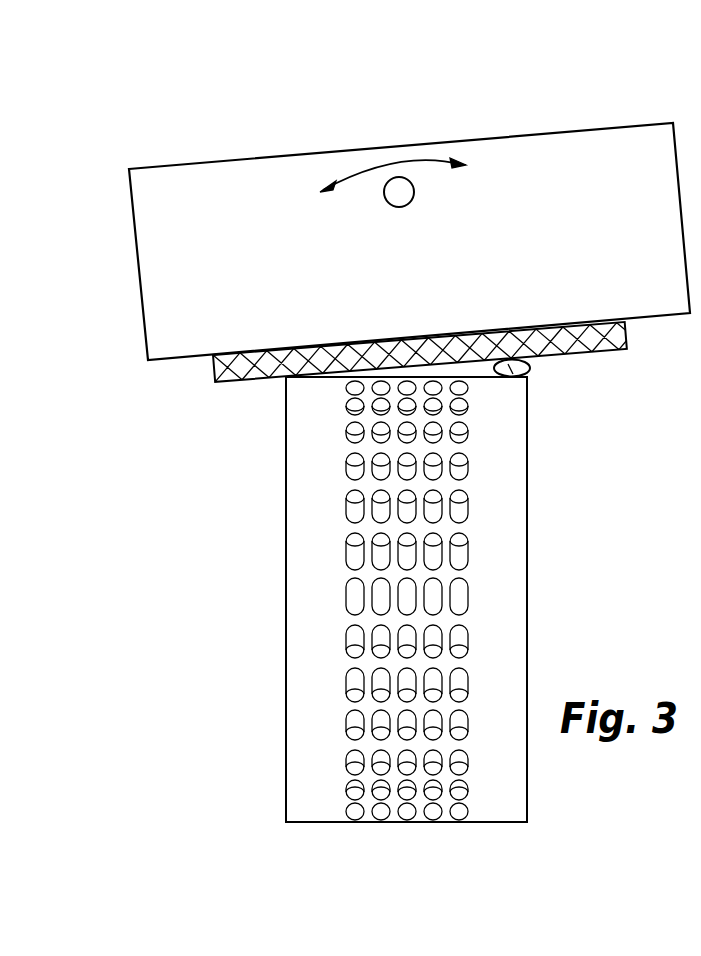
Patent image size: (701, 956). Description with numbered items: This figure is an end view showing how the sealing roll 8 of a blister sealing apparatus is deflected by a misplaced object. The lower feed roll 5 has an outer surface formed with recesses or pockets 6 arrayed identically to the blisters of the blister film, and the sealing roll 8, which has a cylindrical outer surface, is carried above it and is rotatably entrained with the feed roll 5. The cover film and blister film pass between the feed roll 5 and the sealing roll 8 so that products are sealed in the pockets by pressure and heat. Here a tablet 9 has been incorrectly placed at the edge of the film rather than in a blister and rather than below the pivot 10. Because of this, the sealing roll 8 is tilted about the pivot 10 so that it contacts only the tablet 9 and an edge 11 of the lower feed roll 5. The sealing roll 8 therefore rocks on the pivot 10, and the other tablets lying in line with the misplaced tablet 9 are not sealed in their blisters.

The pivot 10 is at (397, 188).
The sealing roll 8 is at (213, 369).
The product 9 is at (517, 378).
The edge of the feed roll 11 is at (284, 378).
The feed roll 5 is at (493, 537).
The pockets 6 is at (348, 634).